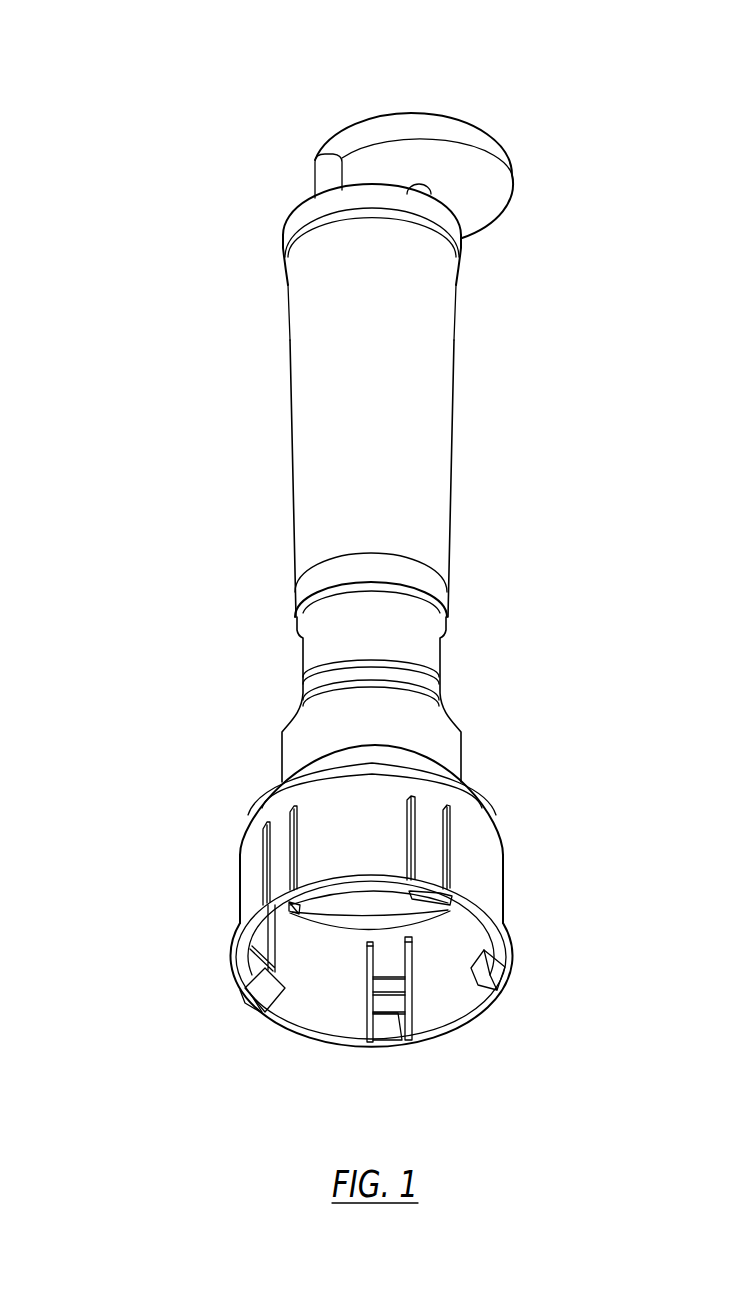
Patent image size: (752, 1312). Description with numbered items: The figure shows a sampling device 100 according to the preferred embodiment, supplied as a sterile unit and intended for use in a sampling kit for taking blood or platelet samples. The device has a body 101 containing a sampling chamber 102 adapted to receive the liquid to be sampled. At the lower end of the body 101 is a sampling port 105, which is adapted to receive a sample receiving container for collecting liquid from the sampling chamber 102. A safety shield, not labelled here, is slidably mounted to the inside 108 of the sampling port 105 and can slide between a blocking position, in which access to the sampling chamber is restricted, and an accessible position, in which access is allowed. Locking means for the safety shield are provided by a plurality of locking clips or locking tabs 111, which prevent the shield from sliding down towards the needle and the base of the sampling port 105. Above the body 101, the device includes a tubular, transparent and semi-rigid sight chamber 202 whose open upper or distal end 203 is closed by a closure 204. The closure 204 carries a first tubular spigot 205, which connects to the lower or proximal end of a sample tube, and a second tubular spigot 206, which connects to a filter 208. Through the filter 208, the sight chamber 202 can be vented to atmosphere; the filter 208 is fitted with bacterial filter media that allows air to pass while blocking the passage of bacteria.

The sampling device 100 is at (205, 562).
The body 101 is at (556, 865).
The sampling chamber 102 is at (432, 658).
The sampling port 105 is at (334, 1013).
The inside of the sampling port 108 is at (453, 993).
The locking tabs 111 is at (513, 978).
The sight chamber 202 is at (435, 415).
The open upper end 203 is at (447, 270).
The closure 204 is at (320, 215).
The first tubular spigot 205 is at (327, 175).
The second tubular spigot 206 is at (423, 190).
The filter 208 is at (437, 115).